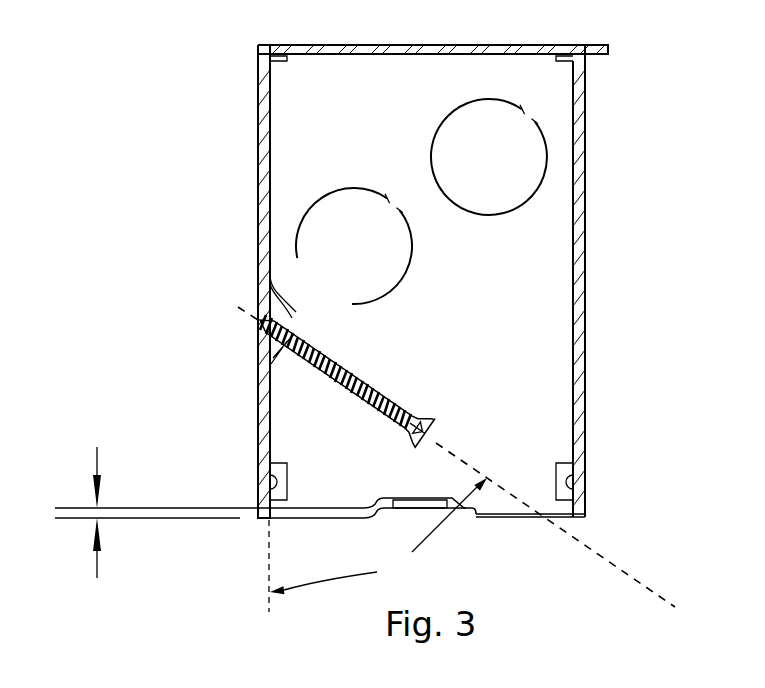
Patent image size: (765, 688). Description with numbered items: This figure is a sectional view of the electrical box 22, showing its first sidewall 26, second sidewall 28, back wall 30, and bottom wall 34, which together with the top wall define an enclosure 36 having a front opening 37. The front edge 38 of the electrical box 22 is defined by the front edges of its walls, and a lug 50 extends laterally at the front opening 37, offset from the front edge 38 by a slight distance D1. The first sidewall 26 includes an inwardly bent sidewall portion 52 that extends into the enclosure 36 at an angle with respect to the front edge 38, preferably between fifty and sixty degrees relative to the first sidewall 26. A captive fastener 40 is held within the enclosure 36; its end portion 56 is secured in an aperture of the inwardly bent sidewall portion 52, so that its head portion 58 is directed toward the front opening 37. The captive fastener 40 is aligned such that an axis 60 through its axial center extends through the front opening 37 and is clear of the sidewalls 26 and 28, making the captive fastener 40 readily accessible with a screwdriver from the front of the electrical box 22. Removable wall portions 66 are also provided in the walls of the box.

The electrical box 22 is at (124, 130).
The first sidewall 26 is at (258, 112).
The second sidewall 28 is at (578, 112).
The back wall 30 is at (463, 45).
The bottom wall 34 is at (471, 272).
The enclosure 36 is at (548, 298).
The front opening 37 is at (485, 505).
The front edge 38 is at (283, 520).
The captive fastener 40 is at (360, 384).
The lug 50 is at (422, 502).
The inwardly bent sidewall portion 52 is at (292, 318).
The end portion 56 is at (278, 362).
The head portion 58 is at (433, 422).
The axis 60 is at (616, 567).
The removable wall portion 66 is at (503, 169).
The distance D1 is at (98, 500).